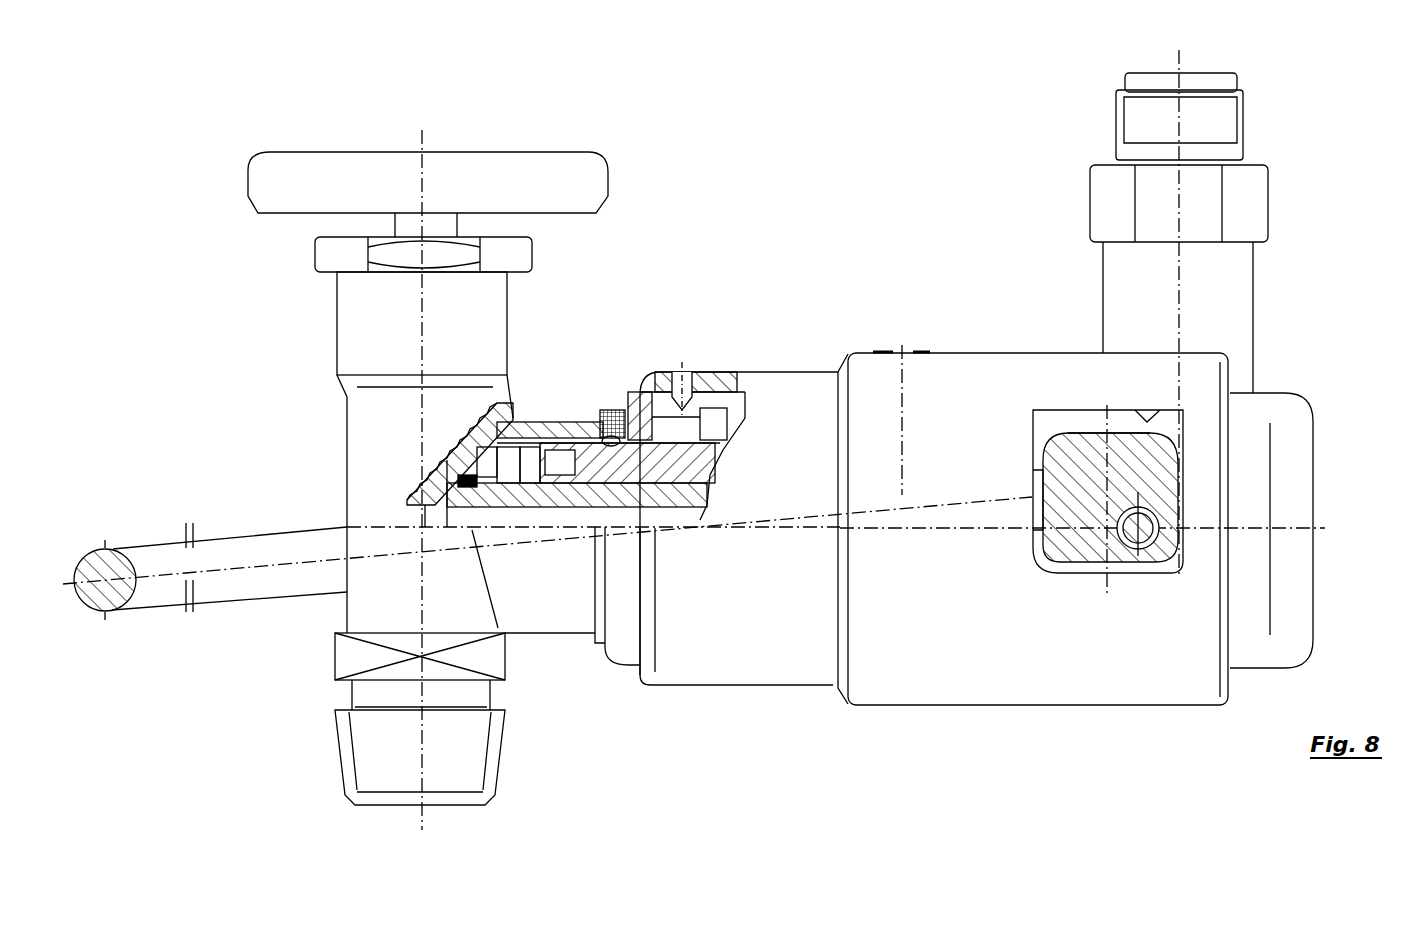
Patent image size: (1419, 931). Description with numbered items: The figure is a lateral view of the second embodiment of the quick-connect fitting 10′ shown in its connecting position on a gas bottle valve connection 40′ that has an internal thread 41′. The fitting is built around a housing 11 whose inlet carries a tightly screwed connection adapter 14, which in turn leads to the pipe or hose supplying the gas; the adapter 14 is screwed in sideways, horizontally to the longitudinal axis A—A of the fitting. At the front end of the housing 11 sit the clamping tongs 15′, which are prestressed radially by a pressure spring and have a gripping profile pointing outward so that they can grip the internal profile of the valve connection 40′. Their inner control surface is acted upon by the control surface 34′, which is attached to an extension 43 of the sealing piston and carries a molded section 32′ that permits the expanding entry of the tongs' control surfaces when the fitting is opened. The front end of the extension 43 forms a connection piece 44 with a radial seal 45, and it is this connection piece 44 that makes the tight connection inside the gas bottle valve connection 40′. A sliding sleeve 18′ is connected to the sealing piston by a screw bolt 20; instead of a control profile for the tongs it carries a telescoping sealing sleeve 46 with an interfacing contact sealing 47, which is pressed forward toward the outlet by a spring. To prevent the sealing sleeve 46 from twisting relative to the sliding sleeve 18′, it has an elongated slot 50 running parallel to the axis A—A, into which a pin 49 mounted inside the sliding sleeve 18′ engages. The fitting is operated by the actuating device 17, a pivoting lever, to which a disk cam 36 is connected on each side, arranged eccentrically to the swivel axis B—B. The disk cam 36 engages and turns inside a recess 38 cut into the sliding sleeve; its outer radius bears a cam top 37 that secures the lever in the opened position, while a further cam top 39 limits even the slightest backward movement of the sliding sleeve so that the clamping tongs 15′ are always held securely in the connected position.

The quick-connect fitting 10′ is at (900, 268).
The housing 11 is at (1285, 443).
The connection adapter 14 is at (1228, 212).
The clamping tongs 15′ is at (735, 425).
The actuating device 17 is at (275, 548).
The sliding sleeve 18′ is at (1080, 678).
The screw bolt 20 is at (920, 348).
The molded section 32′ is at (520, 488).
The control surface 34′ is at (663, 372).
The disk cam 36 is at (1083, 540).
The cam top 37 is at (1085, 433).
The recess 38 is at (1148, 418).
The cam top 39 is at (1038, 545).
The gas bottle valve connection 40′ is at (557, 428).
The internal thread 41′ is at (528, 443).
The extension 43 is at (653, 497).
The connection piece 44 is at (417, 487).
The radial seal 45 is at (458, 477).
The telescoping sealing sleeve 46 is at (797, 637).
The contact sealing 47 is at (608, 410).
The pin 49 is at (690, 370).
The elongated slot 50 is at (718, 403).
The longitudinal axis A is at (387, 527).
The swivel axis B is at (1147, 557).